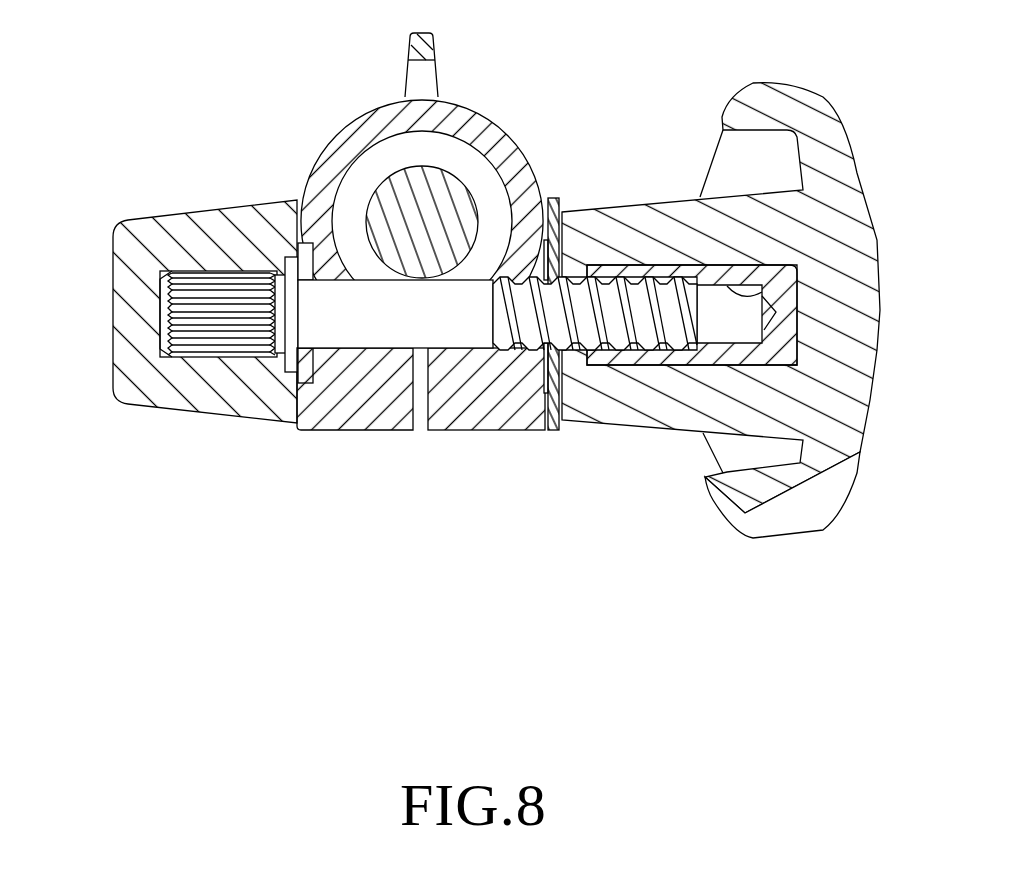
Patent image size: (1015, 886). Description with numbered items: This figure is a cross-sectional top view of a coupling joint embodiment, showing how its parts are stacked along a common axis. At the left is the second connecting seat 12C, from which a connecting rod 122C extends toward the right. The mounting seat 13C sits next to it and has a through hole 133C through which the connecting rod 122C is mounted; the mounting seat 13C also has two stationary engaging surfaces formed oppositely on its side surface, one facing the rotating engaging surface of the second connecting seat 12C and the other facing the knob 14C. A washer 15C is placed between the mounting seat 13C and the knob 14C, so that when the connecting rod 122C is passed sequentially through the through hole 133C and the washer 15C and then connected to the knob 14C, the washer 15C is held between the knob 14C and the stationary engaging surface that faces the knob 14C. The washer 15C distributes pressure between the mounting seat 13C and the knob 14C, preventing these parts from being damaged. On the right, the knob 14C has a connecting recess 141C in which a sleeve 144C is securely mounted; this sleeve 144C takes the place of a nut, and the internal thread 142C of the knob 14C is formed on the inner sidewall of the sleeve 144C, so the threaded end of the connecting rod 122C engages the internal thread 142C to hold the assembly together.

The second connecting seat 12C is at (173, 223).
The mounting seat 13C is at (375, 125).
The through hole 133C is at (365, 337).
The connecting rod 122C is at (408, 330).
The washer 15C is at (555, 420).
The knob 14C is at (843, 183).
The connecting recess 141C is at (765, 296).
The sleeve 144C is at (643, 270).
The internal thread 142C is at (627, 332).